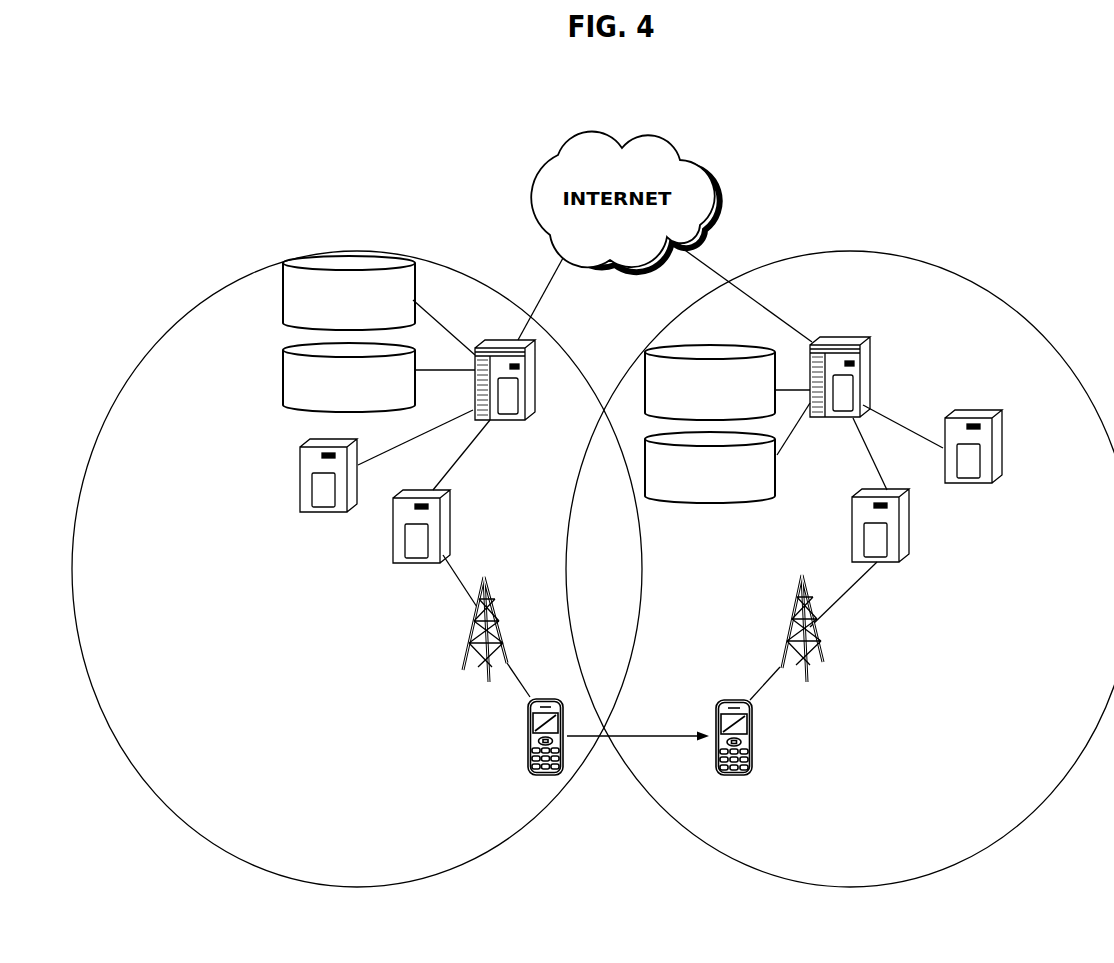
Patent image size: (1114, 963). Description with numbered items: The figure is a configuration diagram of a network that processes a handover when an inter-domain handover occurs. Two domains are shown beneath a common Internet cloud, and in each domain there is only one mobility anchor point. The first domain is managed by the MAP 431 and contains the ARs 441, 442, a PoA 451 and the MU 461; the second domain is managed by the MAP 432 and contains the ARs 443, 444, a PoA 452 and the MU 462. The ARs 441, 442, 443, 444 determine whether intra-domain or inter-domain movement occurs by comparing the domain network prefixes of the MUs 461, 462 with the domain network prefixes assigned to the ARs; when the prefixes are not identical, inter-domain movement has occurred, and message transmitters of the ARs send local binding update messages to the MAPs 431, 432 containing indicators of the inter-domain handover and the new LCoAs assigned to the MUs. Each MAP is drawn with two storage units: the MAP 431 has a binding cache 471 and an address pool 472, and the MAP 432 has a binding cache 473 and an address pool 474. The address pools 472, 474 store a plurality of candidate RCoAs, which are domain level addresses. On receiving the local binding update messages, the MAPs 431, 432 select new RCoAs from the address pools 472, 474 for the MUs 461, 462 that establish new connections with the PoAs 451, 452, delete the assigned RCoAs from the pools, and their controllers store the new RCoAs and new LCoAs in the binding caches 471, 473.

The MAP 431 is at (505, 402).
The MAP 432 is at (837, 400).
The AR 441 is at (287, 475).
The AR 442 is at (381, 526).
The AR 443 is at (922, 525).
The AR 444 is at (1013, 446).
The PoA 451 is at (465, 629).
The PoA 452 is at (779, 628).
The MU 461 is at (502, 737).
The MU 462 is at (777, 737).
The binding cache 471 is at (349, 293).
The address pool 472 is at (349, 377).
The binding cache 473 is at (710, 382).
The address pool 474 is at (710, 467).